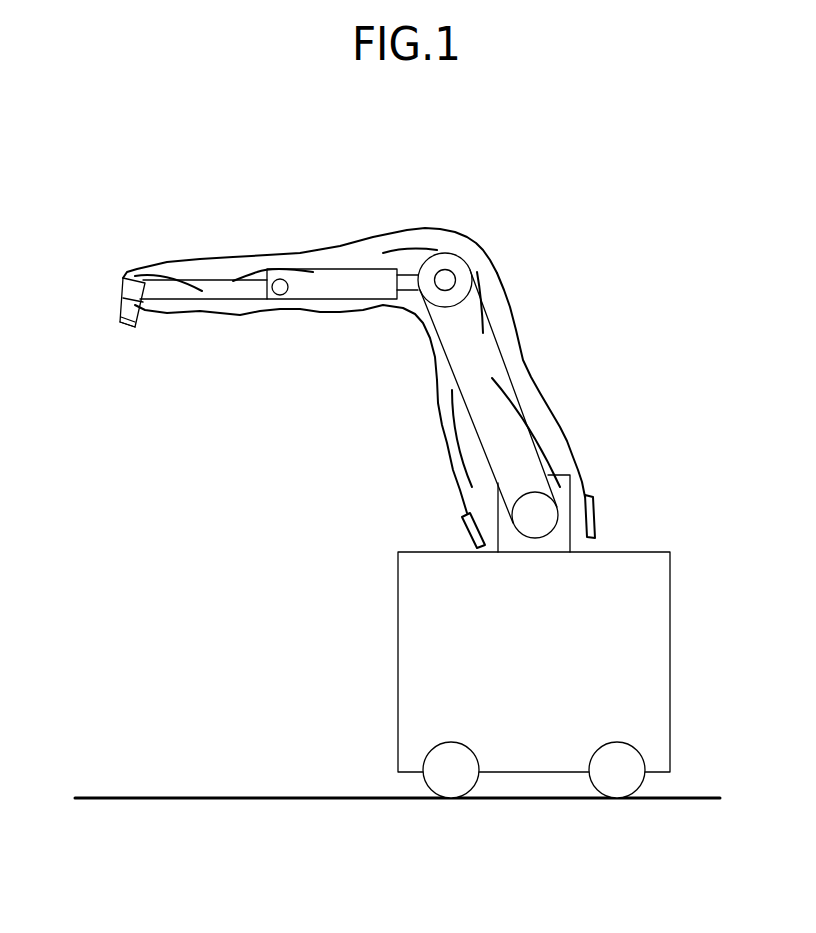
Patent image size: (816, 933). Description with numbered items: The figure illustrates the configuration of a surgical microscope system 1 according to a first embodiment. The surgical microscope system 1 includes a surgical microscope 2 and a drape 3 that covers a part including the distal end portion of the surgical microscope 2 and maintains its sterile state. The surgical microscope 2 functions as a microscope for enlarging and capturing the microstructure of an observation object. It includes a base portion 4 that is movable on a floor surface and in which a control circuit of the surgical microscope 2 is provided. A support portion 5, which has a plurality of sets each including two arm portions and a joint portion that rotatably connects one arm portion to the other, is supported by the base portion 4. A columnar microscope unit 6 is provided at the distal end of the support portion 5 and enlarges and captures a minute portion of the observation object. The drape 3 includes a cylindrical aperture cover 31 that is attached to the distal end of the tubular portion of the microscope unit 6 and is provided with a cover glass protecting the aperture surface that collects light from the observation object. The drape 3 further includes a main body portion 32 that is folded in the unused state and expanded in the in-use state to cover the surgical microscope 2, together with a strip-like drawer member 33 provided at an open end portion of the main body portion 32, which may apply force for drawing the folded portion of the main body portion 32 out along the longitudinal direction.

The surgical microscope system 1 is at (417, 146).
The surgical microscope 2 is at (497, 336).
The drape 3 is at (471, 236).
The base portion 4 is at (657, 663).
The support portion 5 is at (457, 343).
The microscope unit 6 is at (133, 312).
The aperture cover 31 is at (131, 325).
The main body portion 32 is at (557, 418).
The drawer member 33 is at (462, 533).